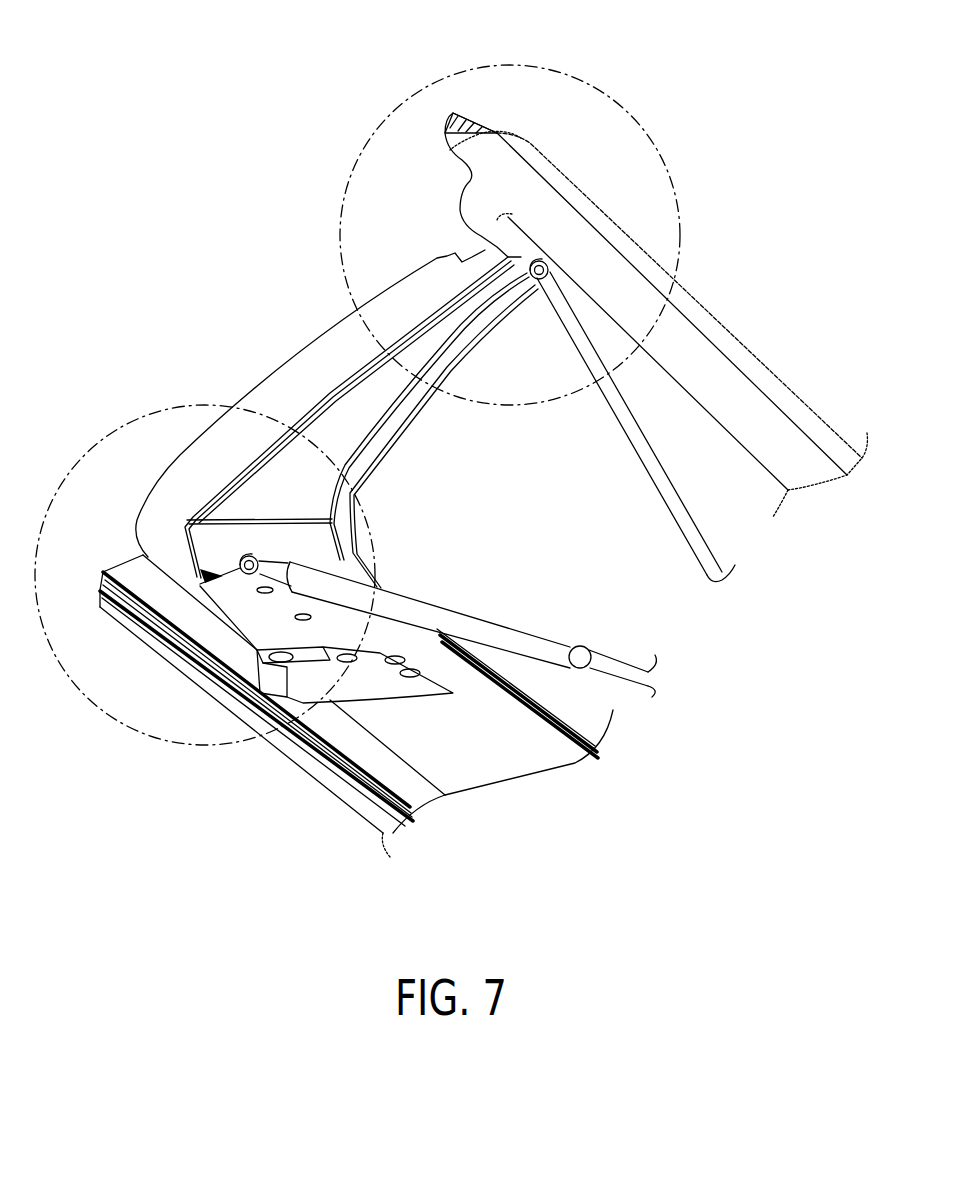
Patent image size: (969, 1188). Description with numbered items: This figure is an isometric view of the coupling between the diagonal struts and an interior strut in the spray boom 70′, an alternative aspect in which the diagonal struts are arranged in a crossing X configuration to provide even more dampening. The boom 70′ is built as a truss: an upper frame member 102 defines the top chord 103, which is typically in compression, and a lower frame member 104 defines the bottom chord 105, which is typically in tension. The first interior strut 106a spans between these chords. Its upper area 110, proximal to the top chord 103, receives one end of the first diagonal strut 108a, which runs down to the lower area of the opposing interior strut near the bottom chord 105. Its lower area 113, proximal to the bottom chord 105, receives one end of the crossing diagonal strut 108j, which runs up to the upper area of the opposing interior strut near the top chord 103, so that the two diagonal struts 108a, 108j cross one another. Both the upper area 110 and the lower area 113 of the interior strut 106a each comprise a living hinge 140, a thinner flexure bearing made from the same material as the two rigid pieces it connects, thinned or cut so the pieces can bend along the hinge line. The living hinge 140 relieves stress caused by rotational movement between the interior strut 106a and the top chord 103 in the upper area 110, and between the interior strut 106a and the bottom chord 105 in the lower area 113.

The spray boom 70′ is at (210, 188).
The upper area of the first interior strut 110 is at (615, 93).
The lower area of the first interior strut 113 is at (148, 413).
The upper frame member 102 is at (717, 357).
The top chord 103 is at (705, 237).
The first interior strut 106a is at (303, 367).
The living hinge 140 is at (534, 287).
The first diagonal strut 108a is at (612, 408).
The crossing diagonal strut 108j is at (485, 598).
The lower frame member 104 is at (258, 690).
The bottom chord 105 is at (255, 745).